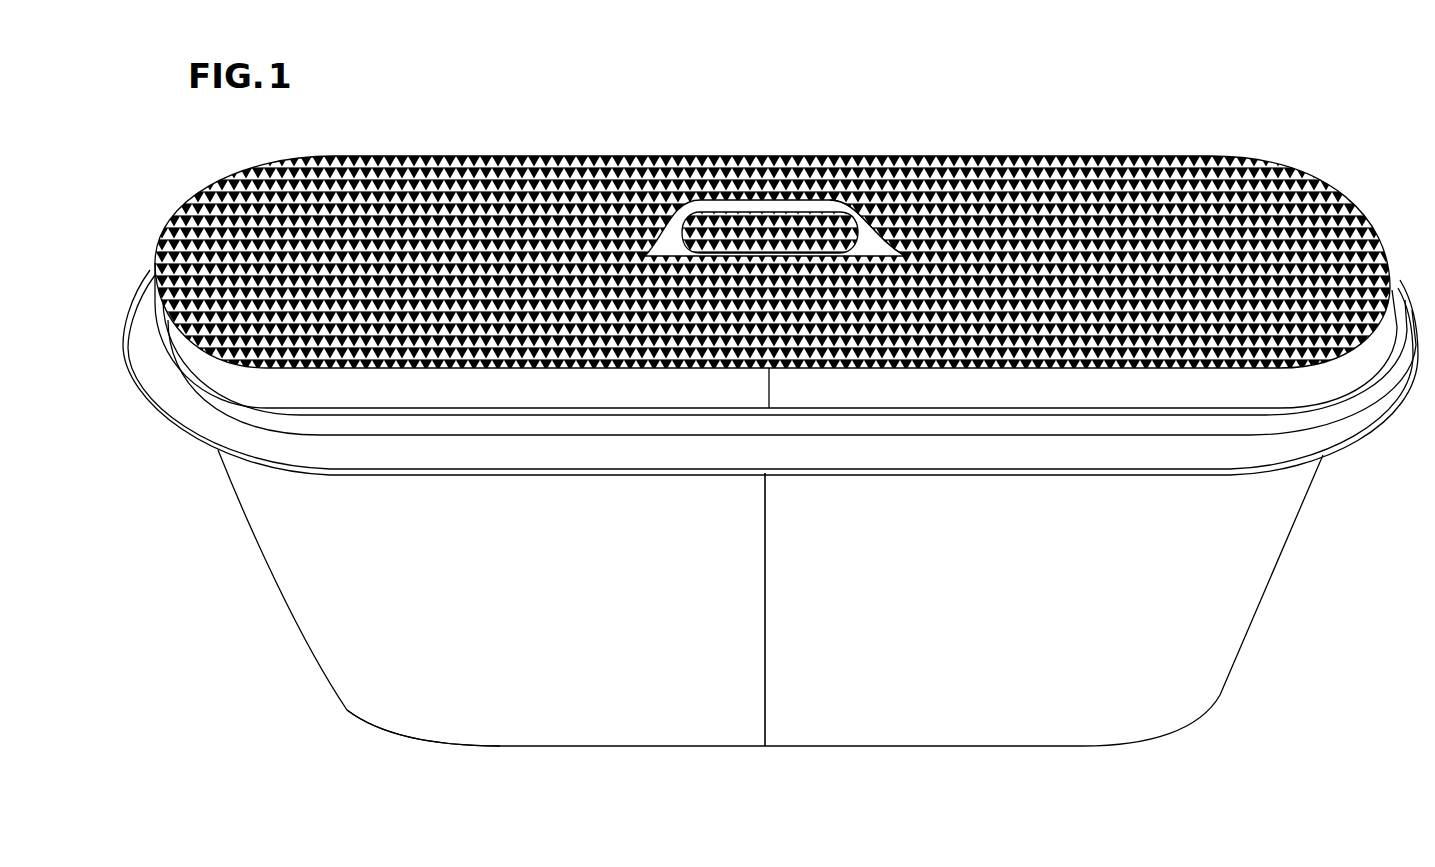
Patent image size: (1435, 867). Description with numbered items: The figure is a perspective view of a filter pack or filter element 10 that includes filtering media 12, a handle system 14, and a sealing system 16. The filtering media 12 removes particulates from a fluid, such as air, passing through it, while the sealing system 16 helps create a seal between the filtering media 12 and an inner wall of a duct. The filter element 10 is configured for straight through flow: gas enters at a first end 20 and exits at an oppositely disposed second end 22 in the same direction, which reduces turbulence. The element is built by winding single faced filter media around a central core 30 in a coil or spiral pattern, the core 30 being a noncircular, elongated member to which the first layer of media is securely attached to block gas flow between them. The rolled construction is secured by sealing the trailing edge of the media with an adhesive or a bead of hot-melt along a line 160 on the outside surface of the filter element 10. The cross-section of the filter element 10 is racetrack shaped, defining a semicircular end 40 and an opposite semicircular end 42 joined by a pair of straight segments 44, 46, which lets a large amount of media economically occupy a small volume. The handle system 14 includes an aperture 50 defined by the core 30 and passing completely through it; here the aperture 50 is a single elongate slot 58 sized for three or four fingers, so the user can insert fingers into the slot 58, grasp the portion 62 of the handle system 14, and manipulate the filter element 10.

The filter element 10 is at (441, 83).
The filtering media 12 is at (1152, 157).
The handle system 14 is at (760, 196).
The sealing system 16 is at (174, 449).
The first end 20 is at (219, 193).
The second end 22 is at (345, 708).
The central core 30 is at (568, 252).
The semicircular end 40 is at (1392, 278).
The semicircular end 42 is at (162, 265).
The straight segment 44 is at (848, 157).
The straight segment 46 is at (802, 368).
The aperture 50 is at (868, 214).
The elongate slot 58 is at (716, 250).
The portion of the handle system 62 is at (724, 207).
The line 160 is at (766, 623).